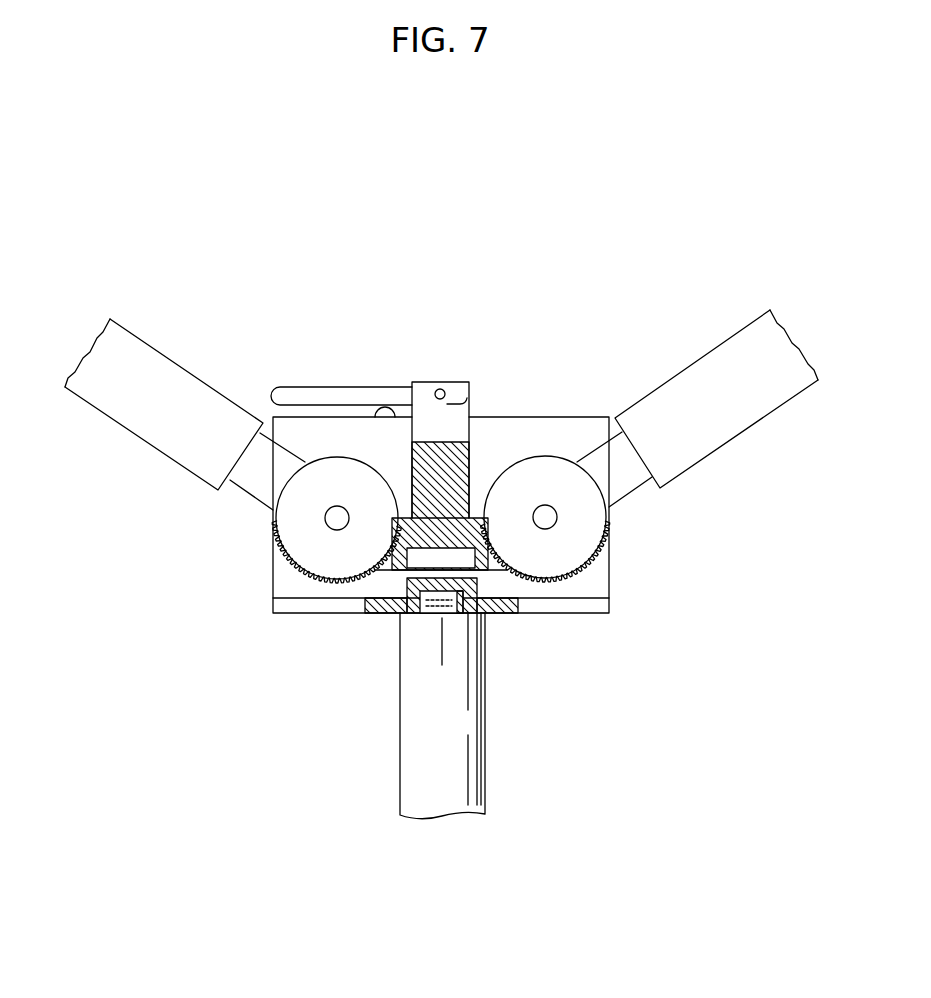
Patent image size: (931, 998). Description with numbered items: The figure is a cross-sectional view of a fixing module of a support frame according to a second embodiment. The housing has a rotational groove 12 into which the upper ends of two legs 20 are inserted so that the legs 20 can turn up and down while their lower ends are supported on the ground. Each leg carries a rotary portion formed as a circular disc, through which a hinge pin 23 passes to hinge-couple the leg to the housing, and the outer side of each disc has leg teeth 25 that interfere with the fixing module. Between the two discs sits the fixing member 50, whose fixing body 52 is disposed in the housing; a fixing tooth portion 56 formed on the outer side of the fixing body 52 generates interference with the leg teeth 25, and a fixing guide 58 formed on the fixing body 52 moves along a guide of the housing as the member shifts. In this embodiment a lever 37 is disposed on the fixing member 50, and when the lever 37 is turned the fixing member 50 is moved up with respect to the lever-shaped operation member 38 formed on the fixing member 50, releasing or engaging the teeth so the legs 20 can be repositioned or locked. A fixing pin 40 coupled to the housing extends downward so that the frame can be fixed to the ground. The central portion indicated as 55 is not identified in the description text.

The rotational groove 12 is at (303, 588).
The legs 20 is at (152, 343).
The hinge pin 23 is at (325, 520).
The leg teeth 25 is at (582, 563).
The lever 37 is at (284, 376).
The lever-shaped operation member 38 is at (446, 389).
The fixing pin 40 is at (485, 752).
The fixing member 50 is at (475, 447).
The fixing body 52 is at (450, 523).
The piston rod 55 is at (470, 400).
The fixing tooth portion 56 is at (389, 571).
The fixing guide 58 is at (458, 562).